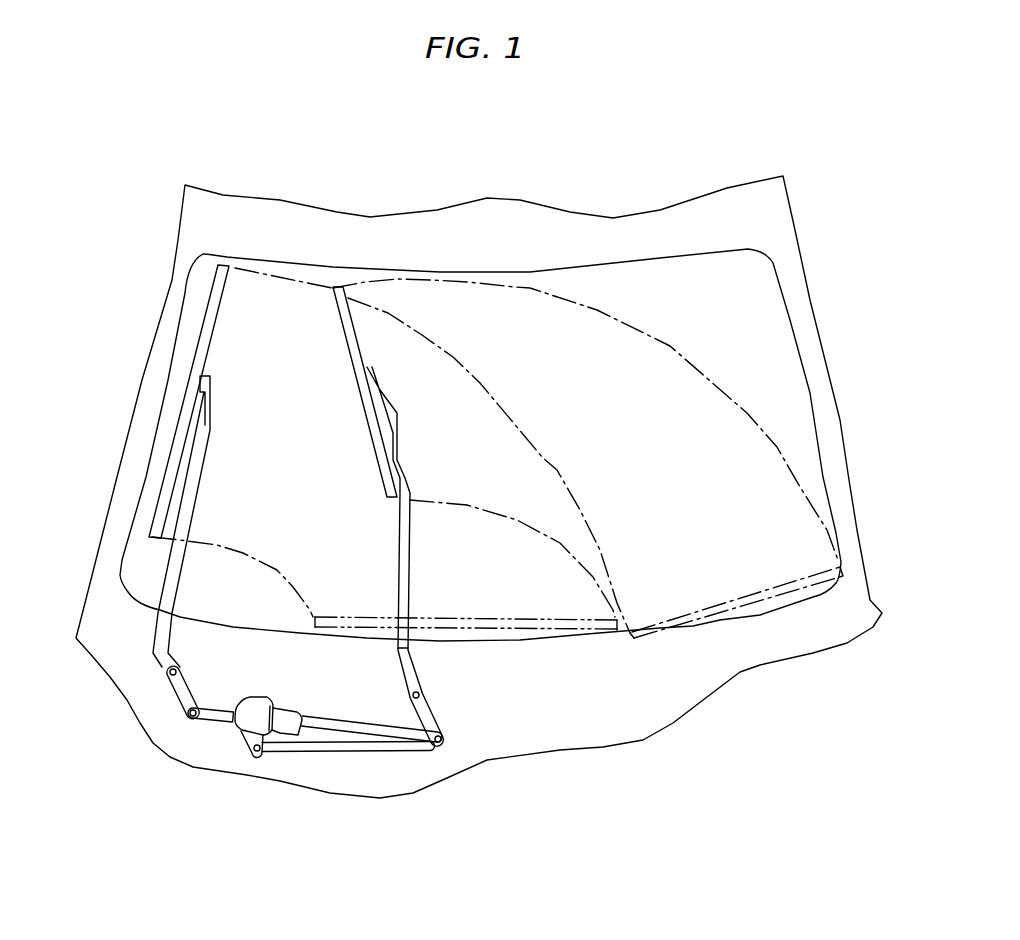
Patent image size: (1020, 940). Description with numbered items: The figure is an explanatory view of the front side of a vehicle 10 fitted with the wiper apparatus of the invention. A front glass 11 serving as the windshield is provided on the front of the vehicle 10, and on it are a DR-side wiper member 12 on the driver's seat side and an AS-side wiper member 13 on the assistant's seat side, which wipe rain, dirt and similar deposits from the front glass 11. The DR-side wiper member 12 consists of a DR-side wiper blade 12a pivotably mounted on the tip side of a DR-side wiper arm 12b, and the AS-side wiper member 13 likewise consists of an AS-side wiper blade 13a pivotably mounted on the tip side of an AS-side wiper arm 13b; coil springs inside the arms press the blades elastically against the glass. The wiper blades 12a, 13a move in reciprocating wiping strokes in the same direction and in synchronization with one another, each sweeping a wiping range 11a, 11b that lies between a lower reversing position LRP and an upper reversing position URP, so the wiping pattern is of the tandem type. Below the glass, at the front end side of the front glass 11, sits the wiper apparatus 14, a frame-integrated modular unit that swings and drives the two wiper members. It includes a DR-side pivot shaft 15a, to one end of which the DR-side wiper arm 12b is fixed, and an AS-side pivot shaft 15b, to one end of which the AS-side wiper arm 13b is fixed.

The vehicle 10 is at (291, 170).
The front glass 11 is at (720, 300).
The wiping range 11a is at (497, 400).
The wiping range 11b is at (750, 413).
The DR-side wiper member 12 is at (141, 466).
The DR-side wiper blade 12a is at (215, 312).
The DR-side wiper arm 12b is at (173, 582).
The AS-side wiper member 13 is at (362, 430).
The AS-side wiper blade 13a is at (347, 348).
The AS-side wiper arm 13b is at (400, 572).
The wiper apparatus 14 is at (231, 752).
The DR-side pivot shaft 15a is at (168, 674).
The AS-side pivot shaft 15b is at (421, 696).
The upper reversing position URP is at (218, 255).
The lower reversing position LRP is at (583, 618).